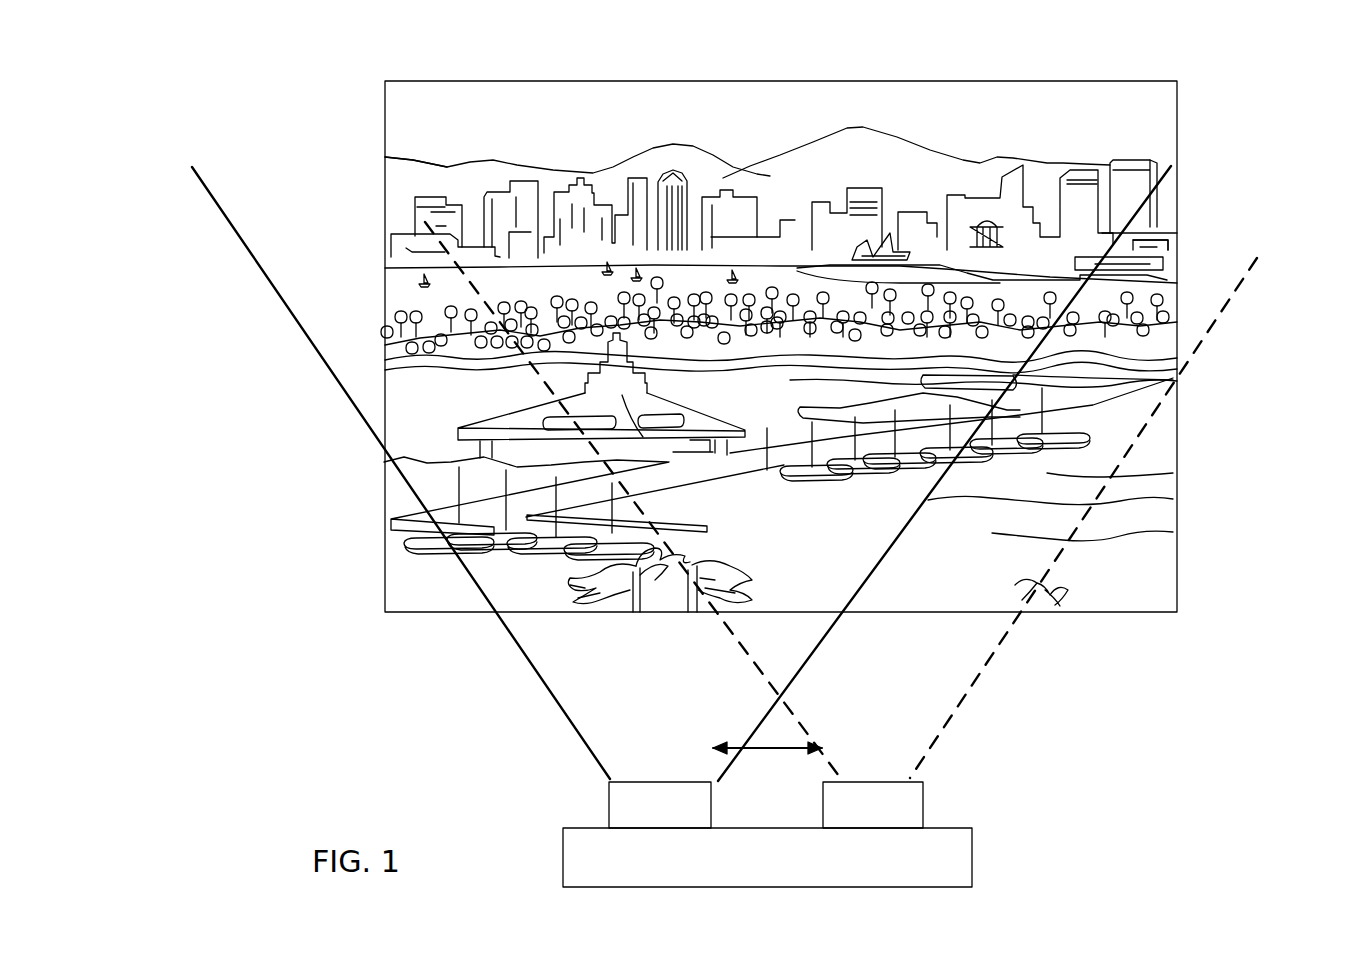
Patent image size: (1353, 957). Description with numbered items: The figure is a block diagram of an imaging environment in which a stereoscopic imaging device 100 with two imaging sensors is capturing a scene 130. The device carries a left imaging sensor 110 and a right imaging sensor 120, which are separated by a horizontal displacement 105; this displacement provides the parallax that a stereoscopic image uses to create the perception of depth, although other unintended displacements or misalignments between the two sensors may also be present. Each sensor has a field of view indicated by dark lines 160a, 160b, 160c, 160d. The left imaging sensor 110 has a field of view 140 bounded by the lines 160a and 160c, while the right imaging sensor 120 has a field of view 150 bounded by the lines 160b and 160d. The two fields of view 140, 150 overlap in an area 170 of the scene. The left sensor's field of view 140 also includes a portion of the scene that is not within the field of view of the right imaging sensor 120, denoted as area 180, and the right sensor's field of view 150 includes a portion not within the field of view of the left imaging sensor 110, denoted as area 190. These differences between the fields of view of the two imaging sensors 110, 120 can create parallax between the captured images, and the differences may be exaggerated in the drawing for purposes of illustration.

The imaging device 100 is at (1030, 826).
The horizontal displacement 105 is at (764, 756).
The left imaging sensor 110 is at (609, 806).
The right imaging sensor 120 is at (923, 806).
The scene 130 is at (385, 498).
The field of view of left imaging sensor 140 is at (494, 473).
The field of view of right imaging sensor 150 is at (1020, 434).
The field of view line 160a is at (218, 215).
The field of view line 160b is at (492, 160).
The field of view line 160c is at (1150, 172).
The field of view line 160d is at (1250, 265).
The overlap area 170 is at (779, 322).
The left-only area 180 is at (385, 250).
The right-only area 190 is at (1167, 235).